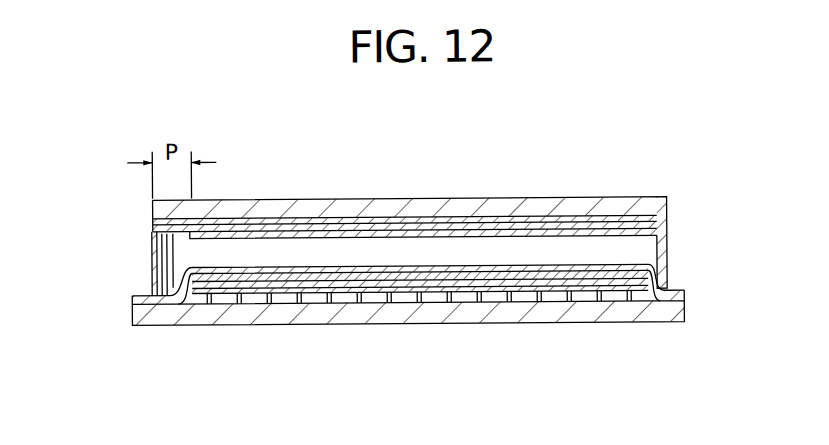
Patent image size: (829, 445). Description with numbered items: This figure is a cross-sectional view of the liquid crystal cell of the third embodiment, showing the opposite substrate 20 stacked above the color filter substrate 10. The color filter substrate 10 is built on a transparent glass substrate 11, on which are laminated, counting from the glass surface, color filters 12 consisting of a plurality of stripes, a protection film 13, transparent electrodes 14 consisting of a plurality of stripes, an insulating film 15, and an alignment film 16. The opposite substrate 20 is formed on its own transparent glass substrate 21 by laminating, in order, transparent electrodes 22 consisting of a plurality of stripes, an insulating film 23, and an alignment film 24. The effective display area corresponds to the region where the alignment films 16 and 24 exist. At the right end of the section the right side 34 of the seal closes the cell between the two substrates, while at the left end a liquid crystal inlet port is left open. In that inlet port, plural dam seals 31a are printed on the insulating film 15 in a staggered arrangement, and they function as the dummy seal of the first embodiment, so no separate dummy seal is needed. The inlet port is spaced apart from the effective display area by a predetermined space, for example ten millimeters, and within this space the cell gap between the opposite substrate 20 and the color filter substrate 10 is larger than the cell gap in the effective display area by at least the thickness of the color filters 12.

The color filter substrate 10 is at (553, 312).
The transparent glass substrate 11 is at (630, 304).
The color filters 12 is at (438, 303).
The protection film 13 is at (473, 291).
The transparent electrodes 14 is at (367, 282).
The insulating film 15 is at (388, 290).
The alignment film 16 is at (620, 262).
The opposite substrate 20 is at (444, 192).
The transparent glass substrate 21 is at (475, 207).
The transparent electrodes 22 is at (519, 226).
The insulating film 23 is at (417, 218).
The alignment film 24 is at (557, 233).
The dam seals 31a is at (152, 245).
The right side 34 is at (662, 270).